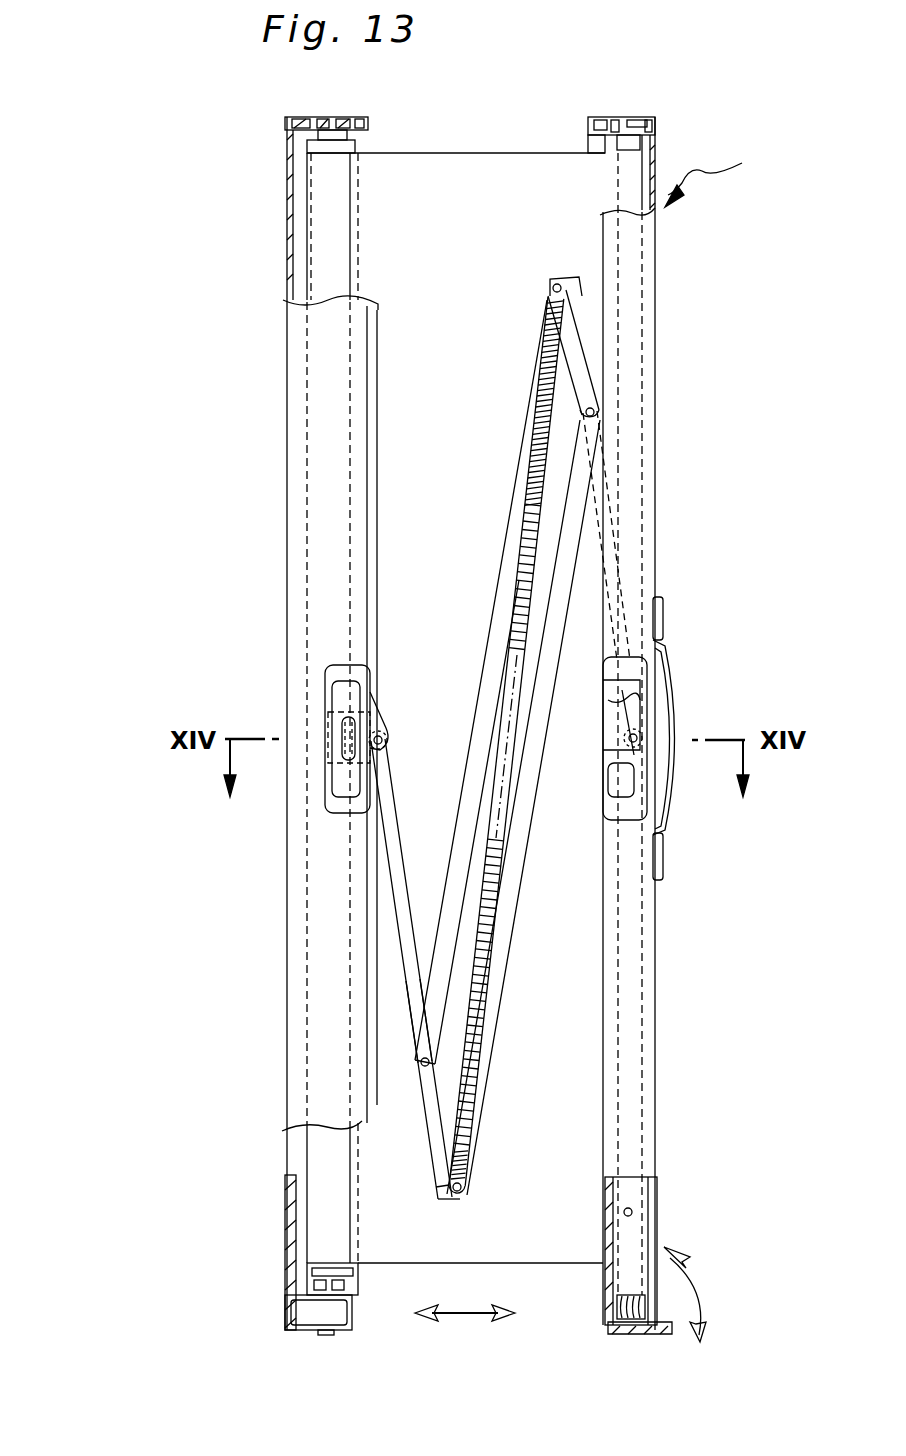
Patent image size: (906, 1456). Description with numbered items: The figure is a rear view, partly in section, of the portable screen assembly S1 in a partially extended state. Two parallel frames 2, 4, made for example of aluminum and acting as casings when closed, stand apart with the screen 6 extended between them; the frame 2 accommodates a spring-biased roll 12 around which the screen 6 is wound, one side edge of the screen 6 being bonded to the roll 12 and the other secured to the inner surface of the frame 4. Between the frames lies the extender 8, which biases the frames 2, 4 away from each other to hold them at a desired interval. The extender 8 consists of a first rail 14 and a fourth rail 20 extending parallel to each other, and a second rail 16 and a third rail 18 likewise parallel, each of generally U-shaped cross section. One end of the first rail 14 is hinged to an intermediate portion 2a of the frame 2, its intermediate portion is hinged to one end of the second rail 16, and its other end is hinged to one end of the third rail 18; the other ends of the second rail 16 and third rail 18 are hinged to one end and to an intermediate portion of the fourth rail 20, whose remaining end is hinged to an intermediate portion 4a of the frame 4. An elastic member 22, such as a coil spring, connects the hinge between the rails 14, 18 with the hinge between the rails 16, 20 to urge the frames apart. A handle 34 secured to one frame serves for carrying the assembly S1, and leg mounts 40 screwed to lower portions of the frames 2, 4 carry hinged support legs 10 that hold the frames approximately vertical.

The frame 2 is at (307, 1022).
The intermediate portion of the frame 2a is at (373, 707).
The frame 4 is at (642, 940).
The intermediate portion of the frame 4a is at (655, 730).
The screen 6 is at (487, 172).
The extender 8 is at (487, 358).
The support legs 10 is at (612, 1313).
The spring-biased roll 12 is at (322, 1230).
The first rail 14 is at (587, 378).
The second rail 16 is at (534, 737).
The third rail 18 is at (512, 552).
The fourth rail 20 is at (432, 1123).
The elastic member 22 is at (530, 474).
The handle 34 is at (677, 800).
The leg mount 40 is at (660, 1259).
The portable screen assembly S1 is at (718, 170).